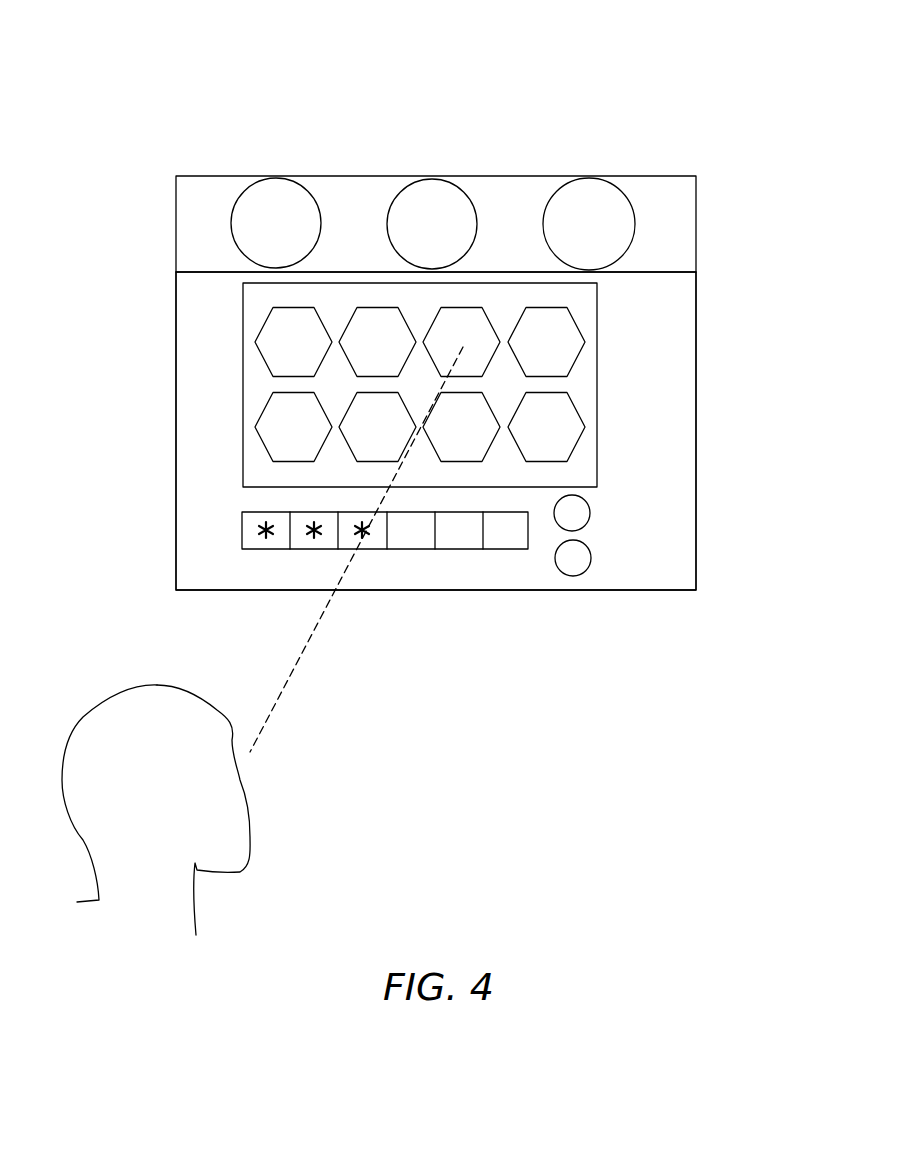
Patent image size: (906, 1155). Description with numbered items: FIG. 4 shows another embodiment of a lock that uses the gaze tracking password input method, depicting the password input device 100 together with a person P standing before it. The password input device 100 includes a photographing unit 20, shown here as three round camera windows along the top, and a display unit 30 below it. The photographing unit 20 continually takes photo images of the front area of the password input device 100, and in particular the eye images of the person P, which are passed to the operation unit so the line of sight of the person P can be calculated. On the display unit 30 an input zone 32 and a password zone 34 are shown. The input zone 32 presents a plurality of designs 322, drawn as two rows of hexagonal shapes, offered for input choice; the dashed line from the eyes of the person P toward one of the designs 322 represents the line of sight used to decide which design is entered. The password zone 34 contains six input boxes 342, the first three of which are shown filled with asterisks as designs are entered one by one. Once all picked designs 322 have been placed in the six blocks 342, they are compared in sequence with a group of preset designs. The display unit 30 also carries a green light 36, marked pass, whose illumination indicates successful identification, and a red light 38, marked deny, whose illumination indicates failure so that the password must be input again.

The password input device 100 is at (208, 152).
The photographing unit 20 is at (663, 224).
The display unit 30 is at (663, 400).
The input zone 32 is at (243, 385).
The designs 322 is at (473, 357).
The password zone 34 is at (242, 530).
The input boxes 342 is at (418, 538).
The green light 36 is at (545, 522).
The red light 38 is at (560, 577).
The person P is at (270, 830).